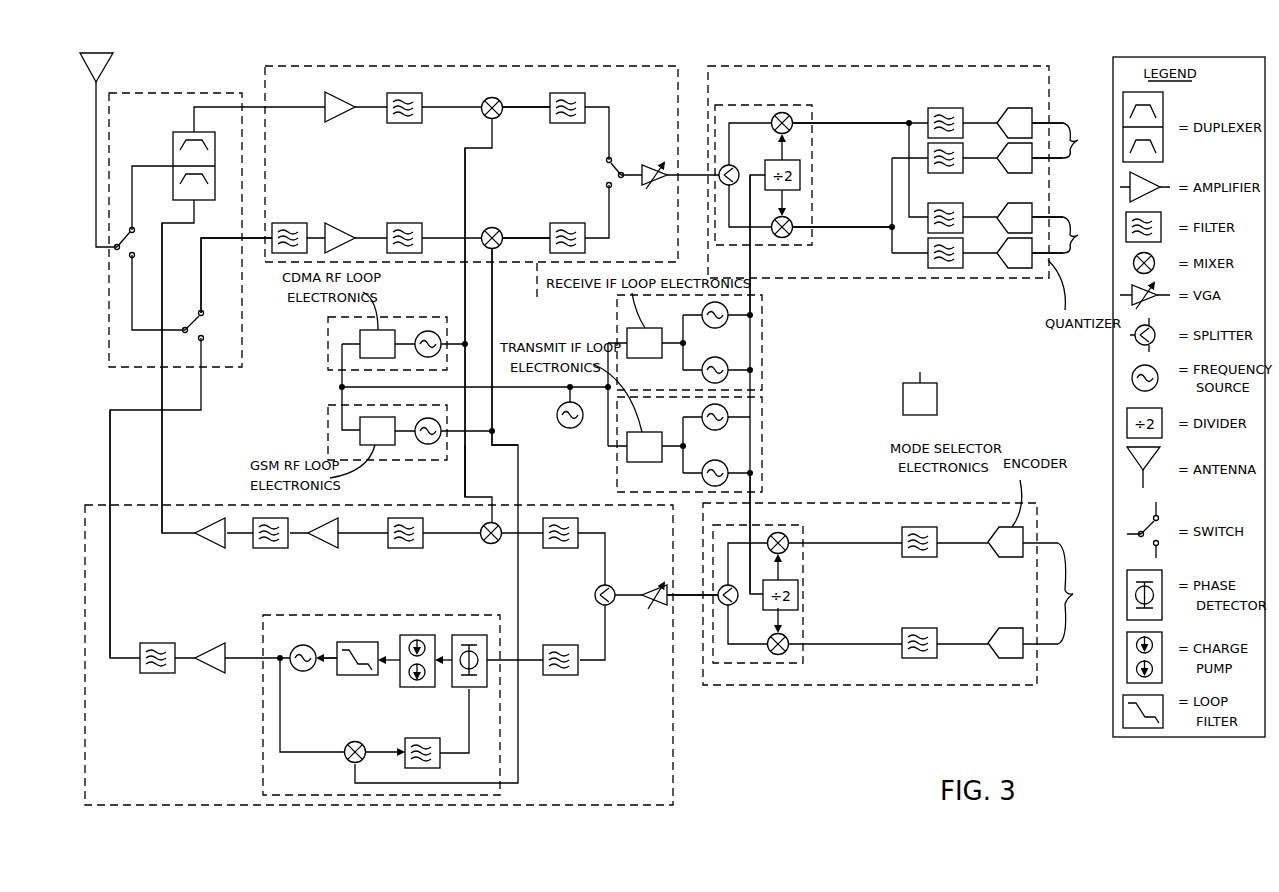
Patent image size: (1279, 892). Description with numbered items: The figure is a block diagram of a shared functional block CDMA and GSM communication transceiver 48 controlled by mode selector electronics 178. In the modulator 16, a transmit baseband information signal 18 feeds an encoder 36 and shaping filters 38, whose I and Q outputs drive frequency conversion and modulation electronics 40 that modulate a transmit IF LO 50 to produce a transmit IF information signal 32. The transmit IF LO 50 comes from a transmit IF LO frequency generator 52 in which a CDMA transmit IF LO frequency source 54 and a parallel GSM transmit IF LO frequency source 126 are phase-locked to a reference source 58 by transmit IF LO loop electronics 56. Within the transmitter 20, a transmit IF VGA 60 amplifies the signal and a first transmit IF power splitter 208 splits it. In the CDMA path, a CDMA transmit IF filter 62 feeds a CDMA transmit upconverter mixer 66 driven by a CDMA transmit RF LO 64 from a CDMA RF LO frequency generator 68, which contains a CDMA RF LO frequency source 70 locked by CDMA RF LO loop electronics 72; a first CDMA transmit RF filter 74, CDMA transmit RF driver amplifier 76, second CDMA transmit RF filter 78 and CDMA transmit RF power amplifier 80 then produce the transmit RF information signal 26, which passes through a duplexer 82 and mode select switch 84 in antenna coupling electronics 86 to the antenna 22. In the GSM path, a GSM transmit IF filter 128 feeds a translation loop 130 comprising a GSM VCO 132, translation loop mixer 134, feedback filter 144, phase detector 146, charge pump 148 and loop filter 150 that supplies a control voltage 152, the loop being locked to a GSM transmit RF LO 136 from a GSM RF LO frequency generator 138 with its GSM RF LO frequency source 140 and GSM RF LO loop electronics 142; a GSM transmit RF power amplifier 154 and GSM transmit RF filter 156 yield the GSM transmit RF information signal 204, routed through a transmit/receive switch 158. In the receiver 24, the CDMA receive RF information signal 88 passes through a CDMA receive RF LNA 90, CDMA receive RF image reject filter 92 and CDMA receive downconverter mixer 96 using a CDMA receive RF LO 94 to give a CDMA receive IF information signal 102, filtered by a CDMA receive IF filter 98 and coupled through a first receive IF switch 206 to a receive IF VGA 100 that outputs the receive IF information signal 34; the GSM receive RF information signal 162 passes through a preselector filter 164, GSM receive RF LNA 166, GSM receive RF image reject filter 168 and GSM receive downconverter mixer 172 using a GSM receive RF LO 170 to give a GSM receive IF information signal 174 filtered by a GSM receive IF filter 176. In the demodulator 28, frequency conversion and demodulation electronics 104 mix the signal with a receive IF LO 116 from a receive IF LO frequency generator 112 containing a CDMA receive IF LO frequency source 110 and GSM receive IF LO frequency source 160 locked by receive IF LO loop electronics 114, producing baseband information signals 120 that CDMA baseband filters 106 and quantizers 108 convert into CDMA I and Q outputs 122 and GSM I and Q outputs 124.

The modulator 16 is at (968, 688).
The transmit baseband information signal 18 is at (1076, 593).
The transmitter 20 is at (90, 770).
The antenna 22 is at (105, 58).
The receiver 24 is at (542, 296).
The transmit RF information signal 26 is at (163, 448).
The demodulator 28 is at (855, 280).
The transmit IF information signal 32 is at (683, 600).
The receive IF information signal 34 is at (697, 175).
The encoder 36 is at (1010, 615).
The shaping filters 38 is at (920, 615).
The frequency conversion and modulation electronics 40 is at (790, 664).
The communication transceiver 48 is at (830, 737).
The transmit IF LO 50 is at (750, 500).
The transmit IF LO frequency generator 52 is at (612, 475).
The CDMA transmit IF LO frequency source 54 is at (728, 411).
The transmit IF LO loop electronics 56 is at (644, 447).
The reference source 58 is at (565, 428).
The transmit IF variable gain amplifier 60 is at (650, 608).
The CDMA transmit IF filter 62 is at (558, 548).
The CDMA transmit RF LO 64 is at (466, 470).
The CDMA transmit upconverter mixer 66 is at (489, 544).
The CDMA RF LO frequency generator 68 is at (326, 352).
The CDMA RF LO frequency source 70 is at (425, 330).
The CDMA RF LO loop electronics 72 is at (377, 344).
The first CDMA transmit RF filter 74 is at (404, 548).
The CDMA transmit RF driver amplifier 76 is at (328, 548).
The second CDMA transmit RF filter 78 is at (270, 548).
The CDMA transmit RF power amplifier 80 is at (215, 548).
The duplexer 82 is at (173, 152).
The mode select switch 84 is at (128, 250).
The antenna coupling electronics 86 is at (90, 354).
The CDMA receive RF information signal 88 is at (258, 106).
The CDMA receive RF LNA 90 is at (333, 122).
The CDMA receive RF image reject filter 92 is at (405, 123).
The CDMA receive RF LO 94 is at (464, 306).
The CDMA receive downconverter mixer 96 is at (500, 118).
The CDMA receive IF filter 98 is at (570, 123).
The receive IF VGA 100 is at (652, 163).
The CDMA receive IF information signal 102 is at (528, 108).
The frequency conversion and demodulation electronics 104 is at (793, 107).
The CDMA baseband filters 106 is at (945, 268).
The quantizers 108 is at (1018, 268).
The CDMA receive IF LO frequency source 110 is at (728, 322).
The receive IF LO frequency generator 112 is at (614, 322).
The receive IF LO loop electronics 114 is at (644, 343).
The receive IF LO 116 is at (750, 288).
The baseband information signals 120 is at (843, 244).
The CDMA I and Q outputs 122 is at (1087, 140).
The GSM I and Q outputs 124 is at (1087, 235).
The GSM transmit IF LO frequency source 126 is at (728, 468).
The GSM transmit IF filter 128 is at (560, 644).
The translation loop 130 is at (262, 746).
The GSM VCO 132 is at (300, 672).
The translation loop mixer 134 is at (360, 741).
The GSM transmit RF LO 136 is at (494, 418).
The GSM RF LO frequency generator 138 is at (326, 440).
The GSM RF LO frequency source 140 is at (425, 448).
The GSM RF LO loop electronics 142 is at (377, 431).
The feedback filter 144 is at (425, 737).
The phase detector 146 is at (462, 634).
The charge pump 148 is at (413, 634).
The loop filter 150 is at (350, 676).
The control voltage 152 is at (340, 642).
The GSM transmit RF power amplifier 154 is at (210, 645).
The GSM transmit RF filter 156 is at (160, 642).
The transmit/receive switch 158 is at (205, 328).
The GSM receive IF LO frequency source 160 is at (728, 365).
The GSM receive RF information signal 162 is at (252, 268).
The preselector filter 164 is at (292, 212).
The GSM receive RF LNA 166 is at (338, 226).
The GSM receive RF image reject filter 168 is at (410, 212).
The GSM receive RF LO 170 is at (493, 305).
The GSM receive downconverter mixer 172 is at (495, 227).
The GSM receive IF information signal 174 is at (522, 238).
The GSM receive IF filter 176 is at (567, 222).
The mode selector electronics 178 is at (928, 438).
The GSM transmit RF information signal 204 is at (111, 460).
The first receive IF switch 206 is at (607, 175).
The first transmit IF power splitter 208 is at (615, 585).